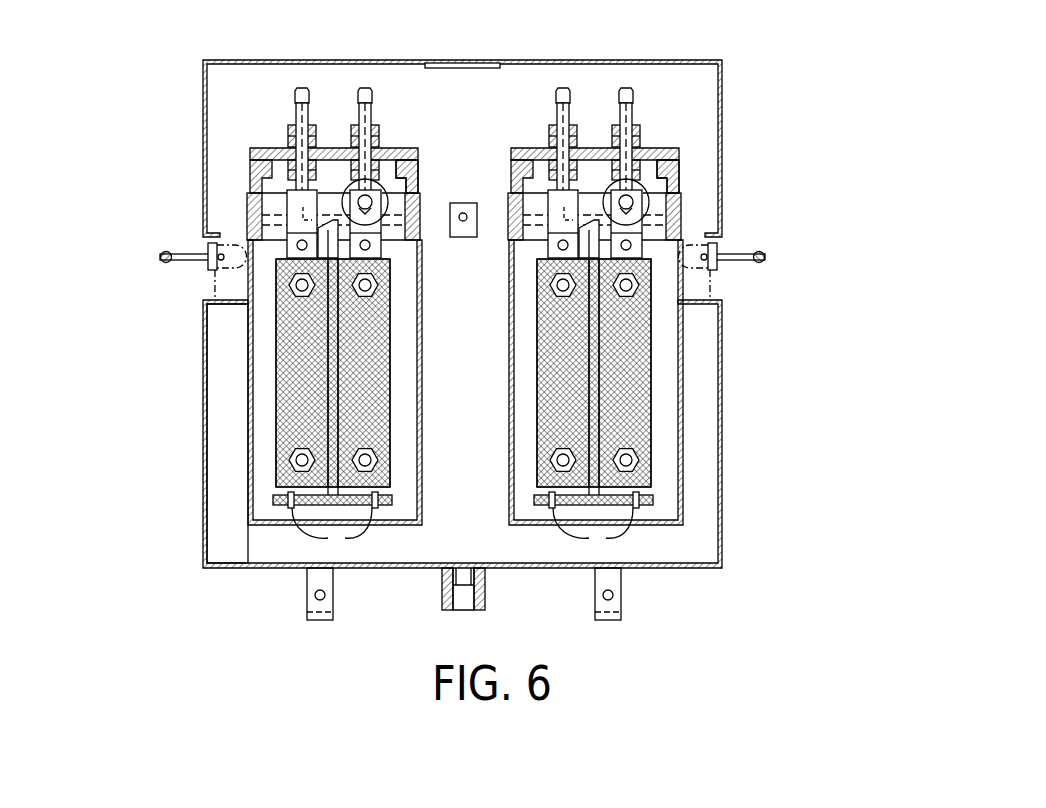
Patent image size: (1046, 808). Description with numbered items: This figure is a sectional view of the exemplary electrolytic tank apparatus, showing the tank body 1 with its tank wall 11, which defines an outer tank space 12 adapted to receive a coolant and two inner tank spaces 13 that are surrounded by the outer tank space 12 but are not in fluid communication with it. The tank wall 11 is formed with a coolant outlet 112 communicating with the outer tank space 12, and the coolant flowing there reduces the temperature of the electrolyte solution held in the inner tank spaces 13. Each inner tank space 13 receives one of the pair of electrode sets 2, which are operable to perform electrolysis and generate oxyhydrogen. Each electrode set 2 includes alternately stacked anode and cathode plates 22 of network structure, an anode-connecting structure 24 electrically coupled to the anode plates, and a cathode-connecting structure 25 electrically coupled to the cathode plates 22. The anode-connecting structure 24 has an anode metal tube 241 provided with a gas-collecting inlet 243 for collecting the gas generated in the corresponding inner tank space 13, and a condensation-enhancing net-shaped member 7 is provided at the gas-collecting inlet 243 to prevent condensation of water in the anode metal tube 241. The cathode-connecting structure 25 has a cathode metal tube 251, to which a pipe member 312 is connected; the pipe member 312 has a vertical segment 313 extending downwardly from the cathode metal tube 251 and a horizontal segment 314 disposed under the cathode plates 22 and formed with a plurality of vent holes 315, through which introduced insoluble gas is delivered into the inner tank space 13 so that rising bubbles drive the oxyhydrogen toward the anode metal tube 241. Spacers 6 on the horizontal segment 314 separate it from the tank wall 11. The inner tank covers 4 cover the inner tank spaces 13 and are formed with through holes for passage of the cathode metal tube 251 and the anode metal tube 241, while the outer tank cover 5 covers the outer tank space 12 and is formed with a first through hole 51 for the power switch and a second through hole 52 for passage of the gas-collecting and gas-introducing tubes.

The tank body 1 is at (197, 383).
The electrode set 2 is at (267, 338).
The inner tank cover 4 is at (265, 150).
The outer tank cover 5 is at (723, 78).
The spacer 6 is at (462, 535).
The condensation-enhancing net-shaped member 7 is at (650, 202).
The tank wall 11 is at (247, 465).
The outer tank space 12 is at (223, 500).
The inner tank space 13 is at (663, 464).
The cathode plate 22 is at (281, 401).
The anode-connecting structure 24 is at (648, 228).
The cathode-connecting structure 25 is at (535, 201).
The first through hole 51 is at (458, 63).
The second through hole 52 is at (450, 223).
The coolant outlet 112 is at (463, 612).
The anode metal tube 241 is at (628, 105).
The gas-collecting inlet 243 is at (672, 167).
The cathode metal tube 251 is at (557, 105).
The pipe member 312 is at (334, 243).
The vertical segment 313 is at (600, 381).
The horizontal segment 314 is at (535, 500).
The vent hole 315 is at (281, 508).